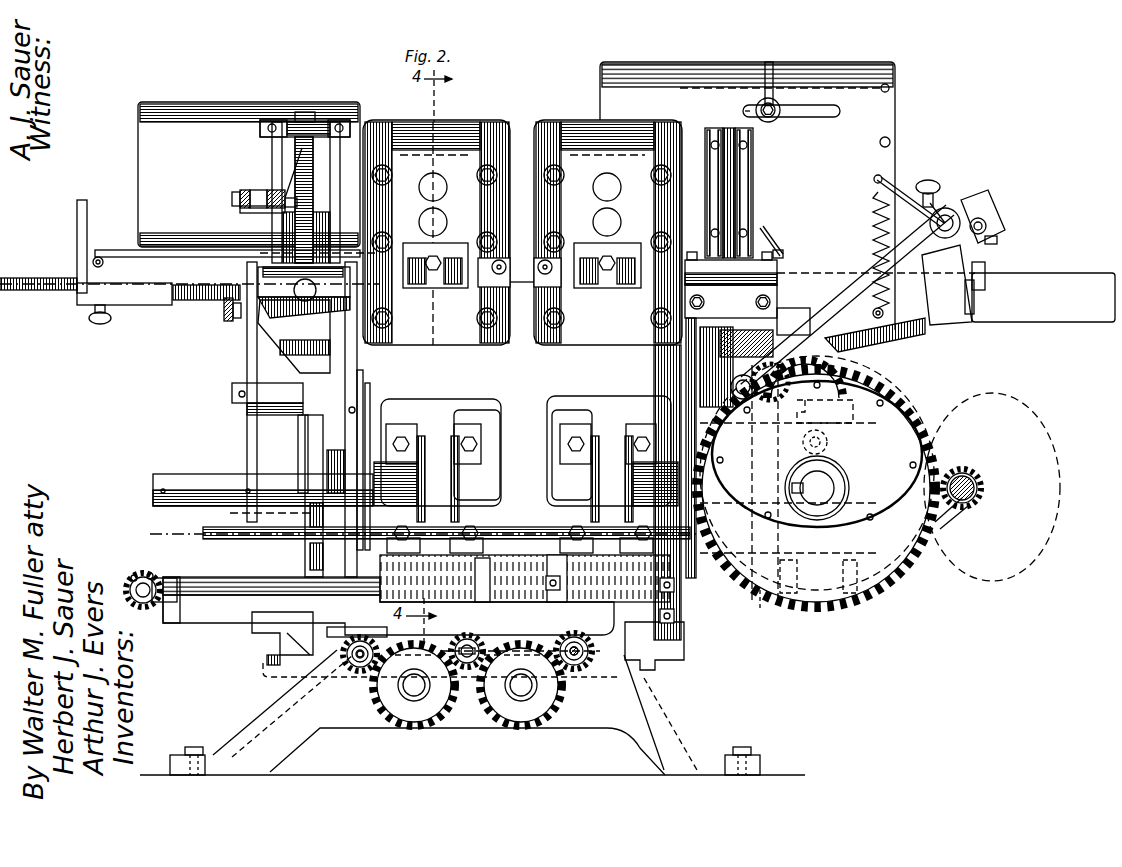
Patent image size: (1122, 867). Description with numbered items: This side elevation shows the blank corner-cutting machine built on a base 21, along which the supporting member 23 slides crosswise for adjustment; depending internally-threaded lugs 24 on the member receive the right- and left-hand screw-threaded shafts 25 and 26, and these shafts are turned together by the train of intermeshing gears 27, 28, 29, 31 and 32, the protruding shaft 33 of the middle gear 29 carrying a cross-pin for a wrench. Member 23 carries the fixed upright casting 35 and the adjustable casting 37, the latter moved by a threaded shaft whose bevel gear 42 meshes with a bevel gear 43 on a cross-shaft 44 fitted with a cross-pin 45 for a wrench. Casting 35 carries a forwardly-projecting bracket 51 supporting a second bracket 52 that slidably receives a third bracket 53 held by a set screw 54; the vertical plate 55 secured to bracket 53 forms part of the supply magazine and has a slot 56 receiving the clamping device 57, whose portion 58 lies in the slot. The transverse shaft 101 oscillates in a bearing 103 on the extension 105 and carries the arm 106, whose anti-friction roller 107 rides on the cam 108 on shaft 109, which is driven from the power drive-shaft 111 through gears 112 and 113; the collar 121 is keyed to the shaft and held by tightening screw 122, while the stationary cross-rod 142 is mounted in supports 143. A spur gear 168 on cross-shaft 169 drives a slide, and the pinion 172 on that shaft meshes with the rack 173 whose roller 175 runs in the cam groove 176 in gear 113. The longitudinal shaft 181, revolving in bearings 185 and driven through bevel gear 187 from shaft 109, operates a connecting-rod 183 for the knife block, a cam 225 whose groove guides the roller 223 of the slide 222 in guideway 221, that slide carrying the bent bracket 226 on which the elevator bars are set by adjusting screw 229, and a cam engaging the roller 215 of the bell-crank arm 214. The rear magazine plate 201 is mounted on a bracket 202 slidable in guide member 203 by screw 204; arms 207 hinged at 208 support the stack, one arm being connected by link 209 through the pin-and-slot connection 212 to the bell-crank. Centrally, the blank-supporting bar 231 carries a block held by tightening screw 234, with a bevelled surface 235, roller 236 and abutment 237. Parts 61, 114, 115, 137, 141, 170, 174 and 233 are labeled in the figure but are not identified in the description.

The base 21 is at (603, 712).
The supporting member 23 is at (237, 612).
The internally-threaded lug 24 is at (360, 637).
The screw-threaded shaft 25 is at (352, 668).
The screw-threaded shaft 26 is at (585, 652).
The gear 27 is at (282, 680).
The gear 28 is at (380, 697).
The middle gear 29 is at (478, 640).
The gear 31 is at (521, 685).
The gear 32 is at (577, 632).
The shaft of middle gear 33 is at (466, 634).
The fixed casting 35 is at (596, 380).
The adjustable casting 37 is at (436, 240).
The bevel gear 42 is at (166, 580).
The bevel gear 43 is at (133, 574).
The cross-shaft 44 is at (150, 572).
The cross-pin 45 is at (144, 612).
The forwardly-projecting bracket 51 is at (686, 363).
The second bracket 52 is at (776, 270).
The third bracket 53 is at (753, 180).
The set screw 54 is at (769, 237).
The vertical plate 55 is at (747, 196).
The slot 56 is at (810, 105).
The clamping device 57 is at (766, 98).
The portion of clamping device 58 is at (783, 106).
The hole 61 is at (890, 140).
The transverse shaft 101 is at (952, 210).
The bearing 103 is at (947, 285).
The extension 105 is at (1040, 297).
The arm 106 is at (882, 290).
The anti-friction roller 107 is at (731, 388).
The cam 108 is at (878, 382).
The shaft 109 is at (817, 500).
The drive-shaft 111 is at (974, 482).
The gear 112 is at (968, 509).
The gear 113 is at (946, 468).
The spring 114 is at (873, 225).
The link 115 is at (905, 195).
The collar 121 is at (958, 203).
The tightening screw 122 is at (935, 178).
The bracket 137 is at (990, 191).
The roller 141 is at (990, 205).
The stationary cross-rod 142 is at (1000, 246).
The support 143 is at (990, 263).
The spur gear 168 is at (828, 362).
The cross-shaft 169 is at (880, 346).
The cover plate 170 is at (811, 467).
The pinion 172 is at (747, 310).
The rack 173 is at (799, 482).
The pin 174 is at (825, 427).
The roller 175 is at (916, 398).
The cam groove 176 is at (906, 590).
The longitudinal shaft 181 is at (179, 478).
The connecting-rod 183 is at (440, 402).
The bearing 185 is at (474, 430).
The bevel gear 187 is at (754, 590).
The upright plate 201 is at (249, 174).
The bracket 202 is at (297, 170).
The guide member 203 is at (280, 294).
The screw 204 is at (303, 296).
The arm 207 is at (272, 142).
The hinge 208 is at (334, 124).
The link 209 is at (258, 192).
The pin and slot connection 212 is at (266, 211).
The bell-crank arm 214 is at (297, 425).
The anti-friction roller 215 is at (300, 461).
The guideway 221 is at (357, 347).
The slide 222 is at (358, 406).
The roller 223 is at (302, 442).
The cam 225 is at (330, 501).
The bent bracket 226 is at (312, 352).
The adjusting screw 229 is at (224, 313).
The blank-supporting bar 231 is at (36, 277).
The block 233 is at (155, 306).
The tightening screw 234 is at (97, 326).
The inclined surface 235 is at (123, 249).
The anti-friction roller 236 is at (100, 256).
The abutment 237 is at (77, 222).